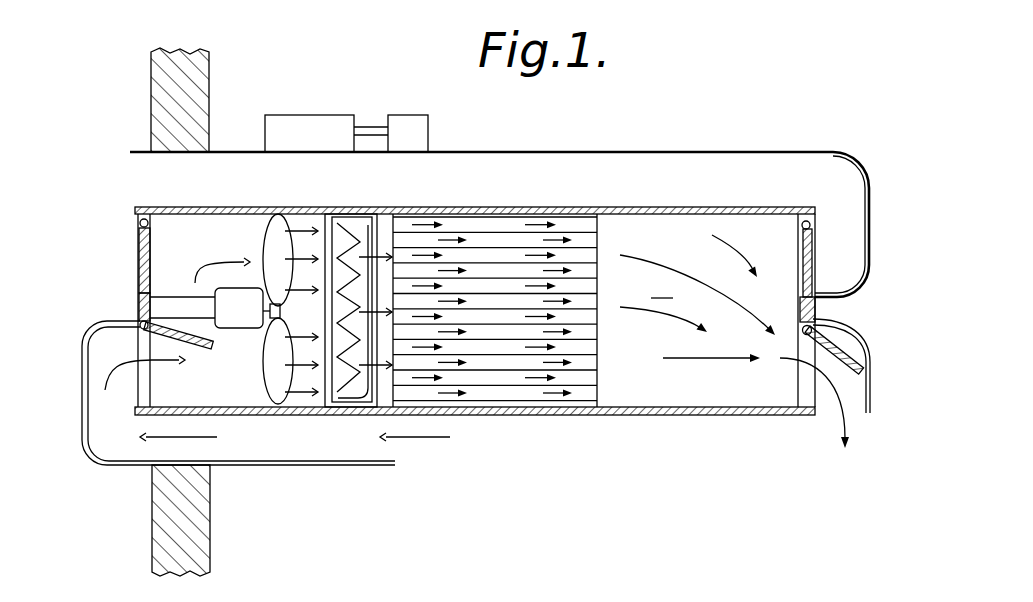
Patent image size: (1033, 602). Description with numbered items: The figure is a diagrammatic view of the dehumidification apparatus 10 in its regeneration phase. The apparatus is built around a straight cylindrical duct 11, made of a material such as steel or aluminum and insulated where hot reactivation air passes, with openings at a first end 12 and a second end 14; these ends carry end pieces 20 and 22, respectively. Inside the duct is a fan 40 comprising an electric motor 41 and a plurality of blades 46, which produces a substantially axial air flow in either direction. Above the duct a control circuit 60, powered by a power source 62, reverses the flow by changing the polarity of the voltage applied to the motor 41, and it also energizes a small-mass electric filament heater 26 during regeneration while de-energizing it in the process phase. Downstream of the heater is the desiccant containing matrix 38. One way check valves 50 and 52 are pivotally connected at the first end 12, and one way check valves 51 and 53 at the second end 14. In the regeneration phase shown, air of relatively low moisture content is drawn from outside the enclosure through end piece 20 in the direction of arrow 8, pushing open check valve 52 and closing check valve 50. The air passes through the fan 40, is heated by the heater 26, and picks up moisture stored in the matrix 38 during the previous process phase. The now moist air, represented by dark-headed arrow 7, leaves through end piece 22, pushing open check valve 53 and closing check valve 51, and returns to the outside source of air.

The dehumidification apparatus 10 is at (641, 145).
The first end 12 is at (118, 243).
The arrow 8 is at (203, 283).
The blades 46 is at (265, 247).
The heater 26 is at (347, 242).
The desiccant containing matrix 38 is at (500, 238).
The arrow 7 is at (735, 240).
The one way check valve 51 is at (813, 247).
The second end 14 is at (856, 311).
The one way check valve 50 is at (138, 278).
The one way check valve 52 is at (140, 333).
The electric motor 41 is at (231, 329).
The fan 40 is at (253, 403).
The end piece 20 is at (142, 386).
The end piece 22 is at (805, 380).
The one way check valve 53 is at (858, 343).
The control circuit 60 is at (307, 122).
The power source 62 is at (410, 121).
The cylindrical duct 11 is at (666, 285).